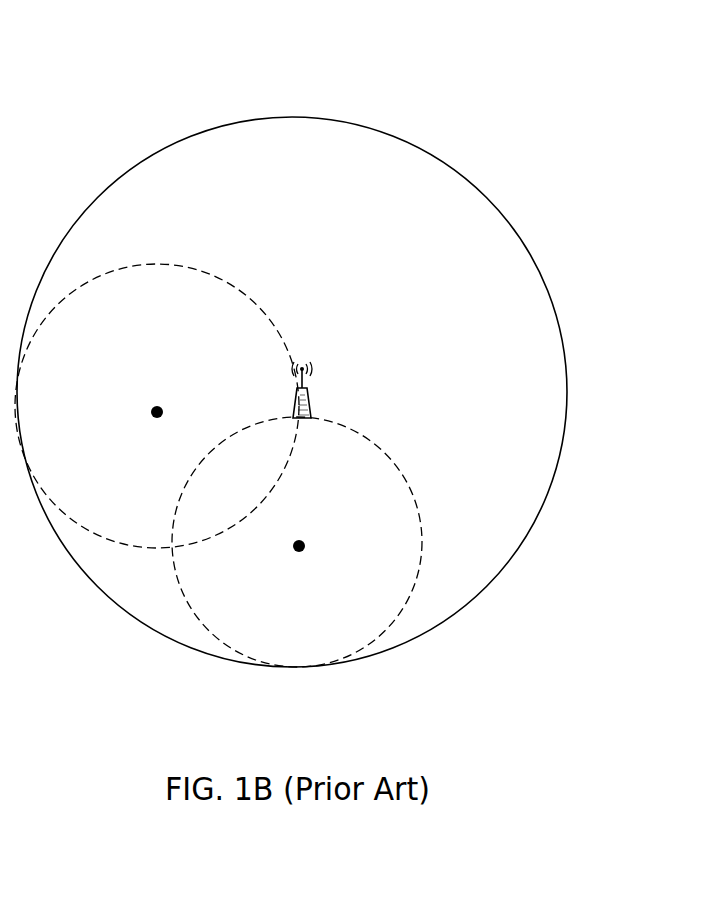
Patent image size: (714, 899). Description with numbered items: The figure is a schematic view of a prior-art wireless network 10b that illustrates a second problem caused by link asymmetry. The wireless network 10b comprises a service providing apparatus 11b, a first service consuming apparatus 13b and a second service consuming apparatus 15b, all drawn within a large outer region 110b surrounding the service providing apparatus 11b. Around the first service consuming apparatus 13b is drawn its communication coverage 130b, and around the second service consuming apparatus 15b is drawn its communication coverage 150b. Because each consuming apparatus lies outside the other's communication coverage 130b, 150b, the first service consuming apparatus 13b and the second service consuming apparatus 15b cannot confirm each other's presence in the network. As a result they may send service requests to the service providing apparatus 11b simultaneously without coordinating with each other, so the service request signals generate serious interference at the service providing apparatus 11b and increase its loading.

The wireless network 10b is at (285, 48).
The base station coverage area 110b is at (483, 193).
The communication coverage 150b is at (235, 285).
The communication coverage 130b is at (409, 484).
The service providing apparatus 11b is at (313, 404).
The second service consuming apparatus 15b is at (164, 412).
The first service consuming apparatus 13b is at (306, 547).